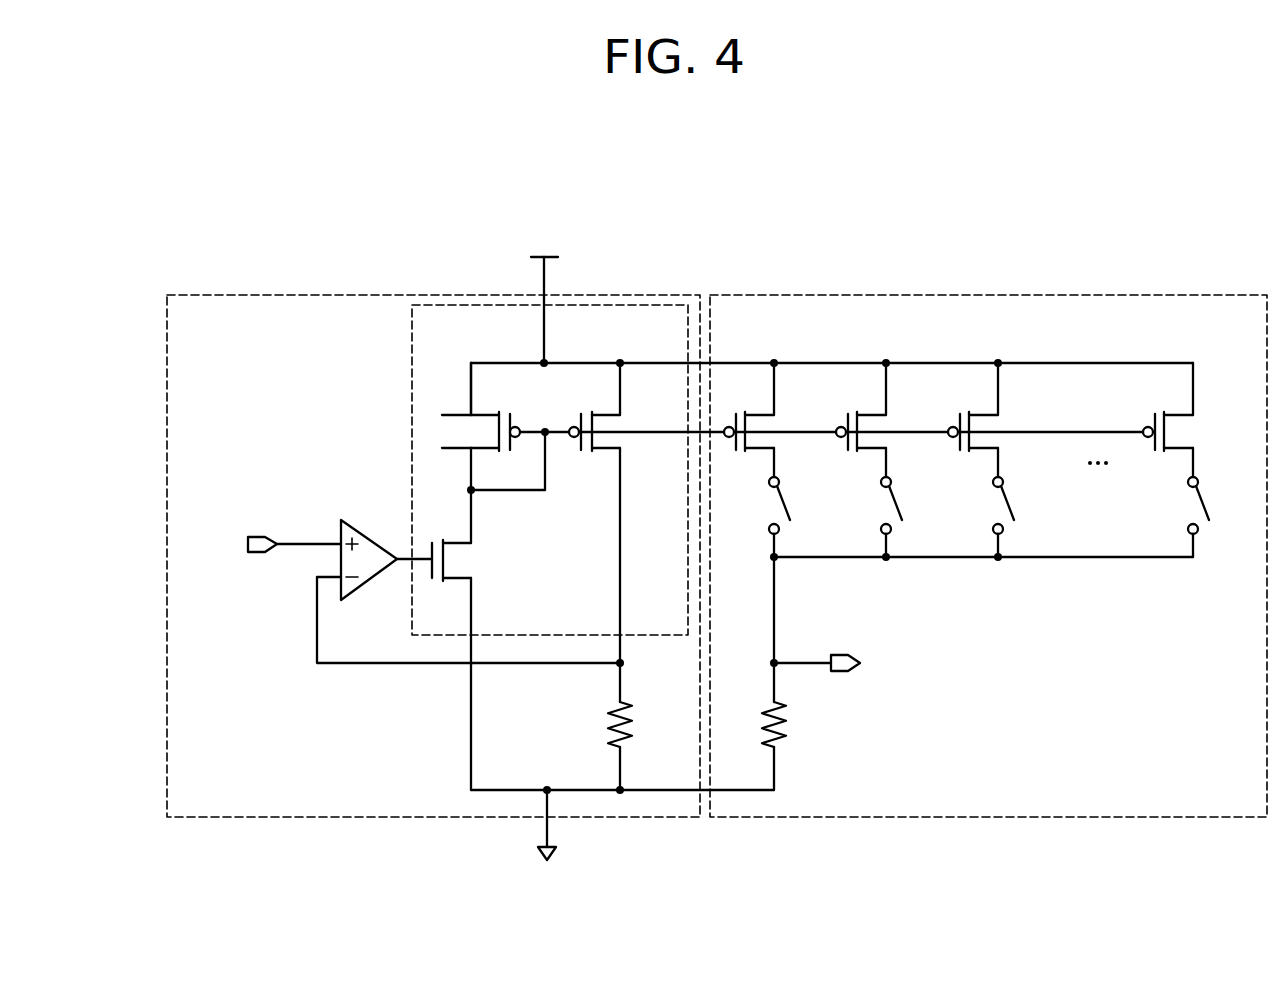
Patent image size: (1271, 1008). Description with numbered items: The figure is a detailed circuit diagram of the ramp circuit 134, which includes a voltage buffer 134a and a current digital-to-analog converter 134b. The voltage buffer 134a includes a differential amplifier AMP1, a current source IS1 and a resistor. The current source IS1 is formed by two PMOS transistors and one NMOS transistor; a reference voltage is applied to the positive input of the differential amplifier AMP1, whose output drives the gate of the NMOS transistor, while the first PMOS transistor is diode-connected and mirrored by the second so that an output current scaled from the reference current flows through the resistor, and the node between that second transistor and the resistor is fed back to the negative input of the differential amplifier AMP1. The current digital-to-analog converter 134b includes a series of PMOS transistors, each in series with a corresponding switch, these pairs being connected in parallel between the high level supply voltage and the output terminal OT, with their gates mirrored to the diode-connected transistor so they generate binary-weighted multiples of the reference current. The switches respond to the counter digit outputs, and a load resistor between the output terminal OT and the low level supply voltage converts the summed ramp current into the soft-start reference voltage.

The ramp circuit 134 is at (753, 196).
The voltage buffer 134a is at (466, 295).
The current digital-to-analog converter 134b is at (1000, 295).
The current source IS1 is at (412, 396).
The differential amplifier AMP1 is at (370, 536).
The output terminal OT is at (838, 653).